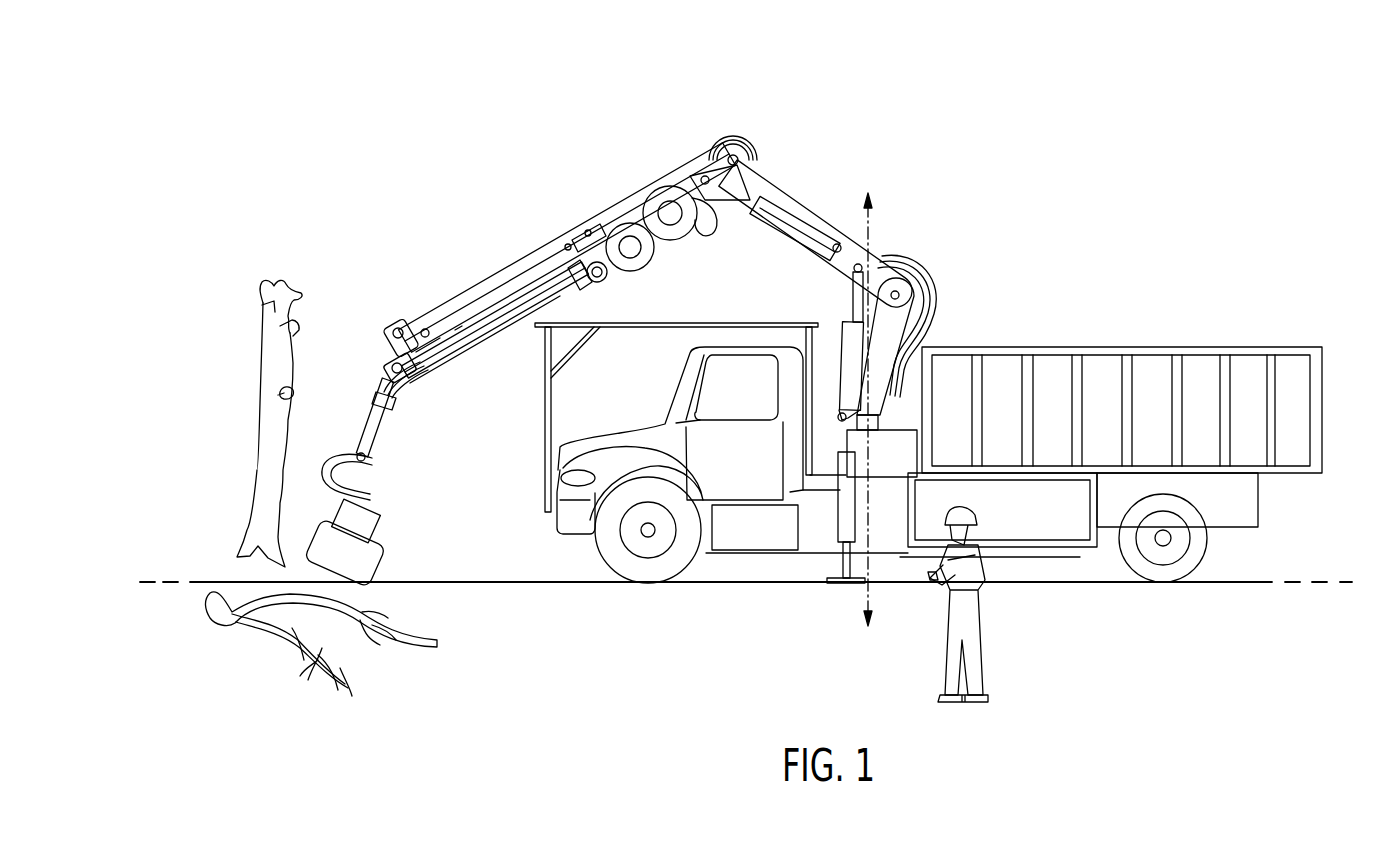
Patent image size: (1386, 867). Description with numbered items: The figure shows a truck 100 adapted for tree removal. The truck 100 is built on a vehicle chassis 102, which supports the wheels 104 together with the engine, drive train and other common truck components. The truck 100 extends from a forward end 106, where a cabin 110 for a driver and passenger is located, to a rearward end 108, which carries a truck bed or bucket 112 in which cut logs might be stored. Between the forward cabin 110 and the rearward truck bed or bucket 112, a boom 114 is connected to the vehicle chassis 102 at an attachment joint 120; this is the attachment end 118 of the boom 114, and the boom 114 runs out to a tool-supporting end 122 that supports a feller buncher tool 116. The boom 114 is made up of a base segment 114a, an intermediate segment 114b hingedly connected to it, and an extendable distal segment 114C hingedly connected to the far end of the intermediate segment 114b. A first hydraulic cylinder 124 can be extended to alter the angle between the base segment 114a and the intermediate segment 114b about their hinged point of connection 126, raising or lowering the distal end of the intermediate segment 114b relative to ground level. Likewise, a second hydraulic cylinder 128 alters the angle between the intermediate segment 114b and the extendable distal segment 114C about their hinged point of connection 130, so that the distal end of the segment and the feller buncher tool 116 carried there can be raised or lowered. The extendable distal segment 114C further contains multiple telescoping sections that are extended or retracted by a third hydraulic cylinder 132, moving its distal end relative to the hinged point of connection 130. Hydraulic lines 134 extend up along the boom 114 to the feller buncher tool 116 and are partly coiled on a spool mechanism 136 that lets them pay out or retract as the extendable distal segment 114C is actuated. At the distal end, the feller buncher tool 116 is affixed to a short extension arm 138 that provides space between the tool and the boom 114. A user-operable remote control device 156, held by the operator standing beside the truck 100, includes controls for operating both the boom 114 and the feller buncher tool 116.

The truck 100 is at (1226, 188).
The vehicle chassis 102 is at (810, 552).
The wheels 104 is at (648, 576).
The forward end 106 is at (546, 547).
The rearward end 108 is at (1292, 498).
The cabin 110 is at (655, 430).
The truck bed or bucket 112 is at (1196, 367).
The boom 114 is at (827, 156).
The base segment 114a is at (888, 363).
The intermediate segment 114b is at (862, 196).
The extendable distal segment 114C is at (645, 208).
The feller buncher tool 116 is at (392, 554).
The attachment end 118 is at (880, 437).
The attachment joint 120 is at (878, 423).
The tool-supporting end 122 is at (404, 401).
The first hydraulic cylinder 124 is at (845, 330).
The hinged point of connection 126 is at (937, 283).
The second hydraulic cylinder 128 is at (770, 217).
The hinged point of connection 130 is at (740, 150).
The third hydraulic cylinder 132 is at (599, 219).
The hydraulic lines 134 is at (480, 342).
The spool mechanism 136 is at (670, 257).
The extension arm 138 is at (368, 432).
The remote control device 156 is at (934, 592).